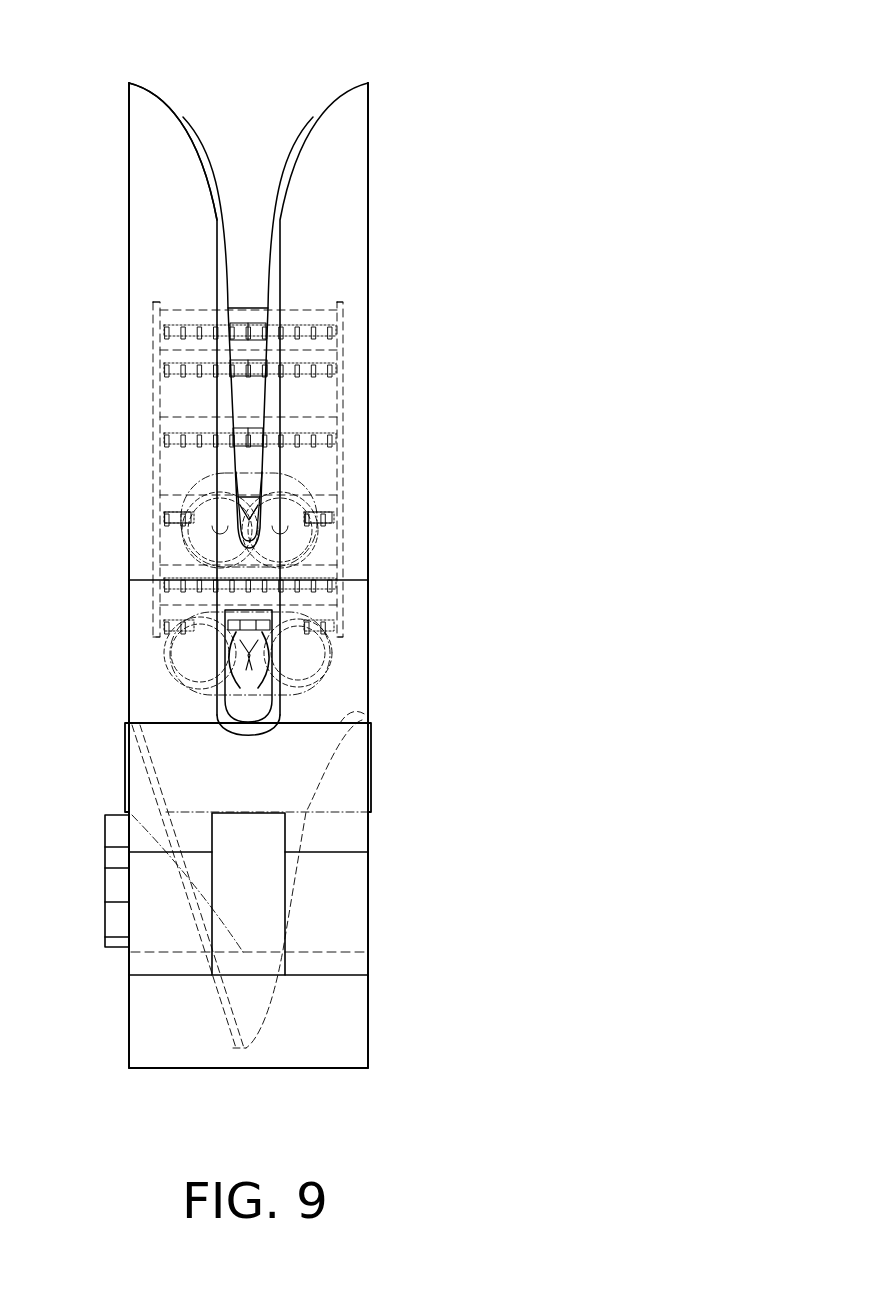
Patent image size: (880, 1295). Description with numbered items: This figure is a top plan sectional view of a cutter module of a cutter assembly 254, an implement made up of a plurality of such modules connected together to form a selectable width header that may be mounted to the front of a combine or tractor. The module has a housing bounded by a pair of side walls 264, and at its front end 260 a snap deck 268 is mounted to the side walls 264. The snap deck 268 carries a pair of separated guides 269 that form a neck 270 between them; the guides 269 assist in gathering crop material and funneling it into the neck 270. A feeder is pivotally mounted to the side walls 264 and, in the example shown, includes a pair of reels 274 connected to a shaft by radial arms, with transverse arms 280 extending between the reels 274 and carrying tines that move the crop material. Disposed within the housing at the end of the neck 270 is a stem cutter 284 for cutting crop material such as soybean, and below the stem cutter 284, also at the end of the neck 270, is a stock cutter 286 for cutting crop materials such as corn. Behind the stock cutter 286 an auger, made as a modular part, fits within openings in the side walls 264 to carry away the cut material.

The cutter assembly 254 is at (486, 556).
The front end 260 is at (266, 44).
The side walls 264 is at (368, 490).
The snap deck 268 is at (378, 97).
The guides 269 is at (160, 221).
The neck 270 is at (293, 100).
The reels 274 is at (344, 399).
The transverse arms 280 is at (315, 303).
The stem cutter 284 is at (185, 545).
The stock cutter 286 is at (310, 678).